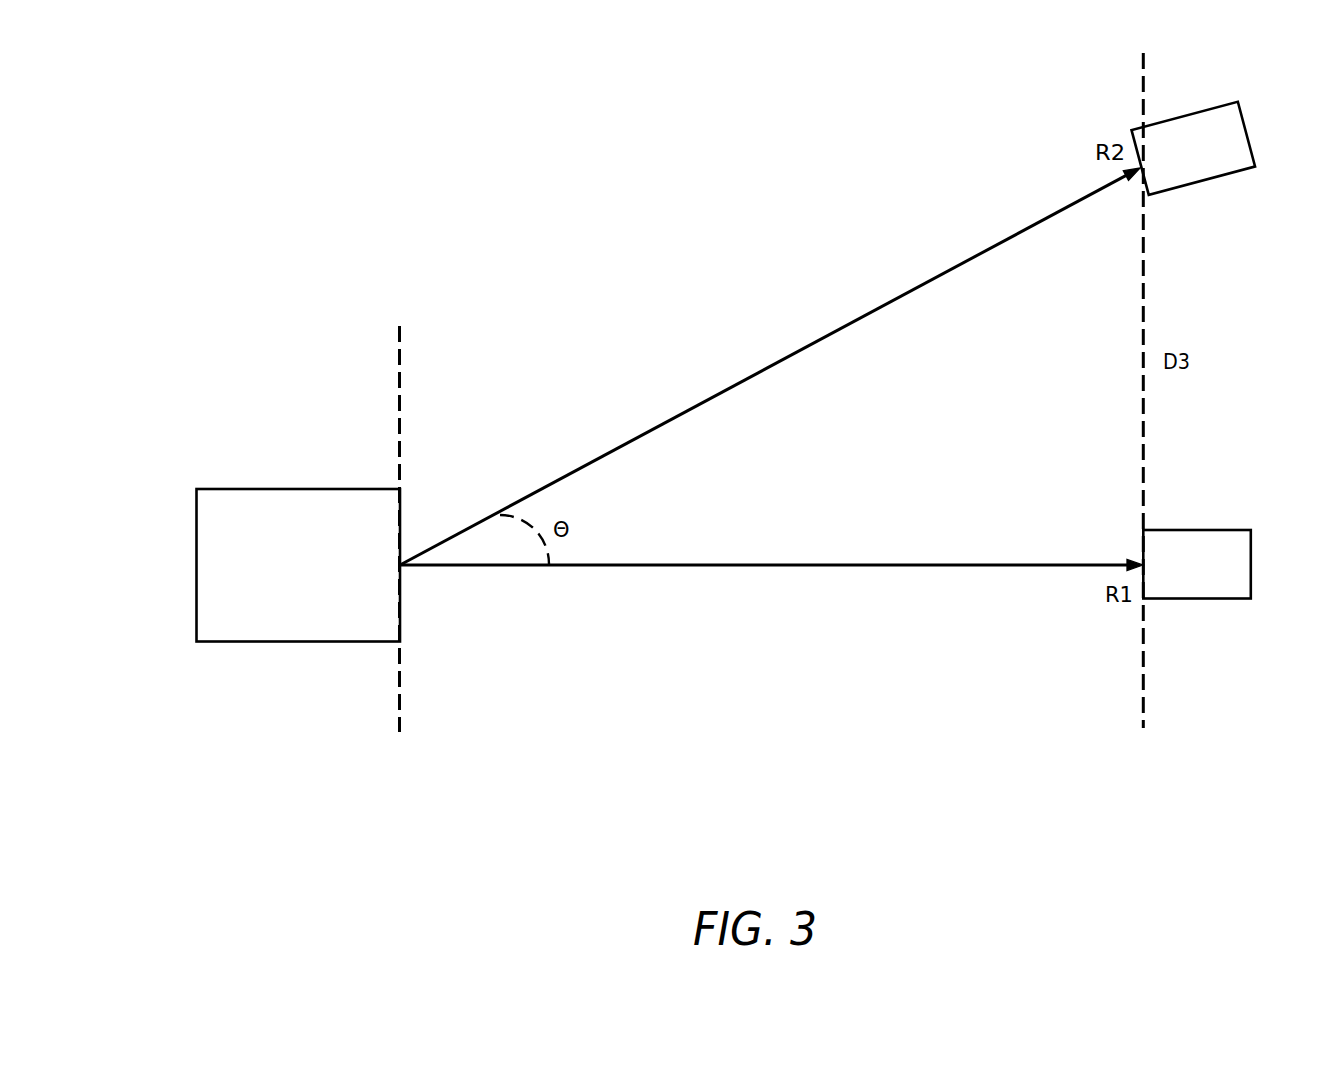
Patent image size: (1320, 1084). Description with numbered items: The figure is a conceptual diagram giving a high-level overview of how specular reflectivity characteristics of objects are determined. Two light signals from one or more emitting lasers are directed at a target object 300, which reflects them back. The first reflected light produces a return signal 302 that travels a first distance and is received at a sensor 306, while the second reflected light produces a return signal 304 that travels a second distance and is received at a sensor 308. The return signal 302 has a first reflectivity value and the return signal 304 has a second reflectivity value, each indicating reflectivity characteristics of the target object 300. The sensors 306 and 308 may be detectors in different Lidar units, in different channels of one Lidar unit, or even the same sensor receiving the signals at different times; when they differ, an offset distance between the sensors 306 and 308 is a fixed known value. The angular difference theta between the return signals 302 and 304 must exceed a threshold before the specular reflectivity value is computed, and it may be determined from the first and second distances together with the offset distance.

The target object 300 is at (194, 491).
The return signal 302 is at (935, 565).
The return signal 304 is at (915, 284).
The sensor 306 is at (1252, 545).
The sensor 308 is at (1250, 137).